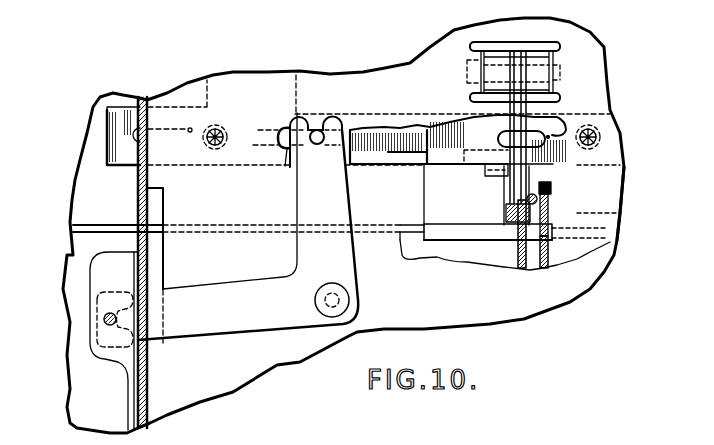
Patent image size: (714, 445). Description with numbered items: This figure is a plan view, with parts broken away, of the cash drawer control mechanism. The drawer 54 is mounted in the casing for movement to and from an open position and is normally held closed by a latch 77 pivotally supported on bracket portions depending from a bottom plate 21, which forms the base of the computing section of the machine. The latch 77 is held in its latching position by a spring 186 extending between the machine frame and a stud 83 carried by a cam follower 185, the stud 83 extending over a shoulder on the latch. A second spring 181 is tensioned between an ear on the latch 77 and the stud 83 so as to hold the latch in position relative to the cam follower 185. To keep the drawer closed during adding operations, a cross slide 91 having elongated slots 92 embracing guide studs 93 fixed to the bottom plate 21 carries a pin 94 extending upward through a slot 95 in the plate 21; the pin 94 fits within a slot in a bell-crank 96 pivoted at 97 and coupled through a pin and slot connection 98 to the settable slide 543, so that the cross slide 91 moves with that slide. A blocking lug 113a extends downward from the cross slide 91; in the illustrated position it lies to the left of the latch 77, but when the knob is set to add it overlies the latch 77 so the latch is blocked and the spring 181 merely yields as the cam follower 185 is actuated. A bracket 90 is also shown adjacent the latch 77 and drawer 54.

The bottom plate 21 is at (314, 77).
The drawer 54 is at (443, 254).
The latch 77 is at (517, 254).
The stud 83 is at (622, 211).
The bracket 90 is at (464, 242).
The cross slide 91 is at (110, 167).
The elongated slots 92 is at (192, 128).
The guide studs 93 is at (226, 128).
The pin 94 is at (316, 130).
The slot 95 is at (286, 168).
The bell-crank 96 is at (300, 203).
The pivot 97 is at (340, 302).
The pin and slot connection 98 is at (96, 318).
The blocking lug 113a is at (496, 175).
The second spring 181 is at (512, 213).
The cam follower 185 is at (510, 199).
The spring 186 is at (553, 190).
The settable slide 543 is at (131, 396).